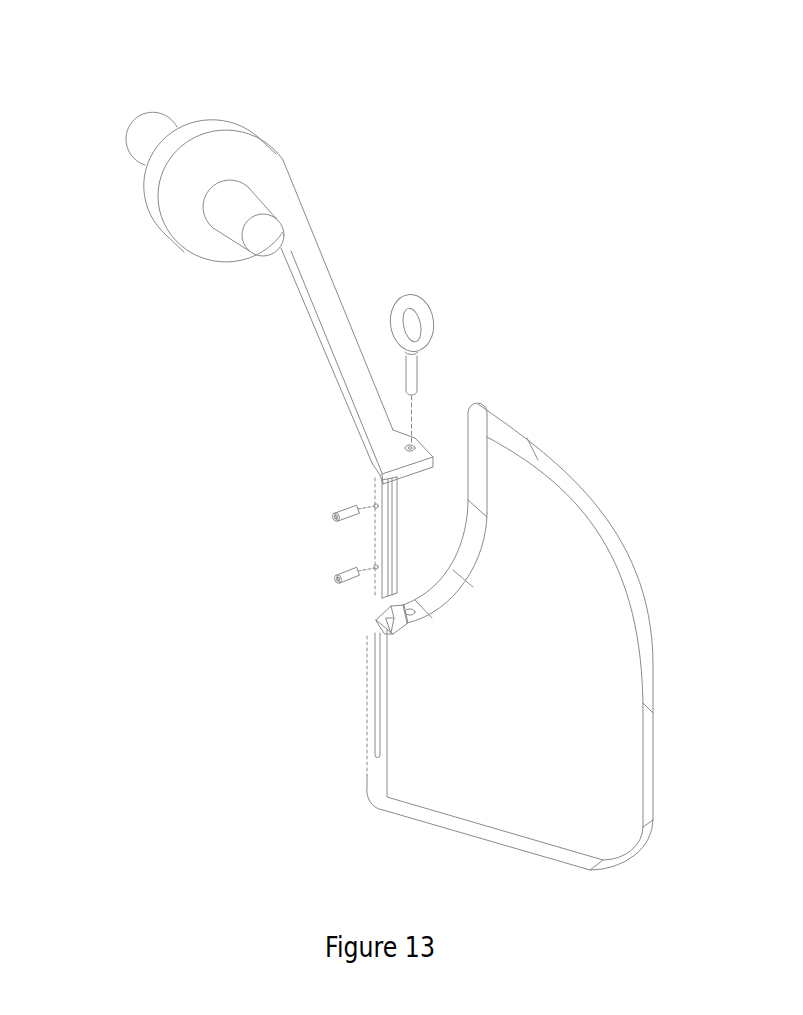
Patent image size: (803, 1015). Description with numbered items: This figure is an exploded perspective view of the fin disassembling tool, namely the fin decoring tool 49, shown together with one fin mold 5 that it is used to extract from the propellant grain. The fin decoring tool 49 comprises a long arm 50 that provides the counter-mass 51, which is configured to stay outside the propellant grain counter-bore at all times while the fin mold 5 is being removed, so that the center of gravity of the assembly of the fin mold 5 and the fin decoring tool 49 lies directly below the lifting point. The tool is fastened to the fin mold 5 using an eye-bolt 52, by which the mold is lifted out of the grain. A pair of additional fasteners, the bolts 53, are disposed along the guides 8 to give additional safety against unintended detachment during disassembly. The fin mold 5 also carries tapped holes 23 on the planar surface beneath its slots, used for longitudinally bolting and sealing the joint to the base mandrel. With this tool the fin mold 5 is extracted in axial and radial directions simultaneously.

The fin decoring tool 49 is at (128, 76).
The counter-mass 51 is at (227, 165).
The long arm 50 is at (320, 272).
The eye-bolt 52 is at (420, 373).
The bolts 53 is at (320, 520).
The guides 8 is at (336, 537).
The tapped holes 23 is at (337, 634).
The fin mold 5 is at (548, 557).